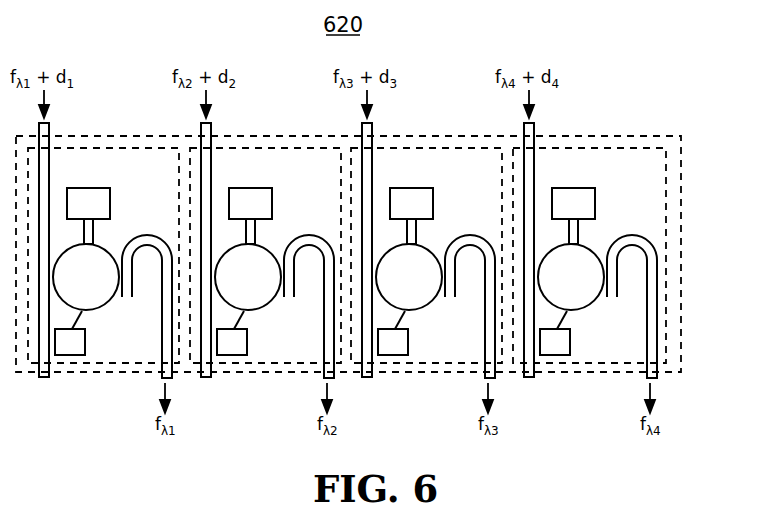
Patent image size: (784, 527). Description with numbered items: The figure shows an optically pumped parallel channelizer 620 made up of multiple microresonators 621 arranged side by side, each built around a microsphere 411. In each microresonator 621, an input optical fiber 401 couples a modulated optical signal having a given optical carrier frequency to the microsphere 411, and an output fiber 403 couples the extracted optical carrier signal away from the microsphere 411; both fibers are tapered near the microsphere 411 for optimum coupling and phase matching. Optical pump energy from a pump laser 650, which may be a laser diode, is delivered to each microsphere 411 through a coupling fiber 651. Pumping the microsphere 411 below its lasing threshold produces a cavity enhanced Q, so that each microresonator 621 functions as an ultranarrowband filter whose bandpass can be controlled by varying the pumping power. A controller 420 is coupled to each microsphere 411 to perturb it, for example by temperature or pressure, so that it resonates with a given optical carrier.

The channelizer 620 is at (682, 220).
The microresonator 621 is at (126, 140).
The input optical fiber 401 is at (49, 152).
The pump laser 650 is at (98, 188).
The coupling fiber 651 is at (95, 231).
The microsphere 411 is at (121, 242).
The output fiber 403 is at (162, 344).
The controller 420 is at (85, 336).